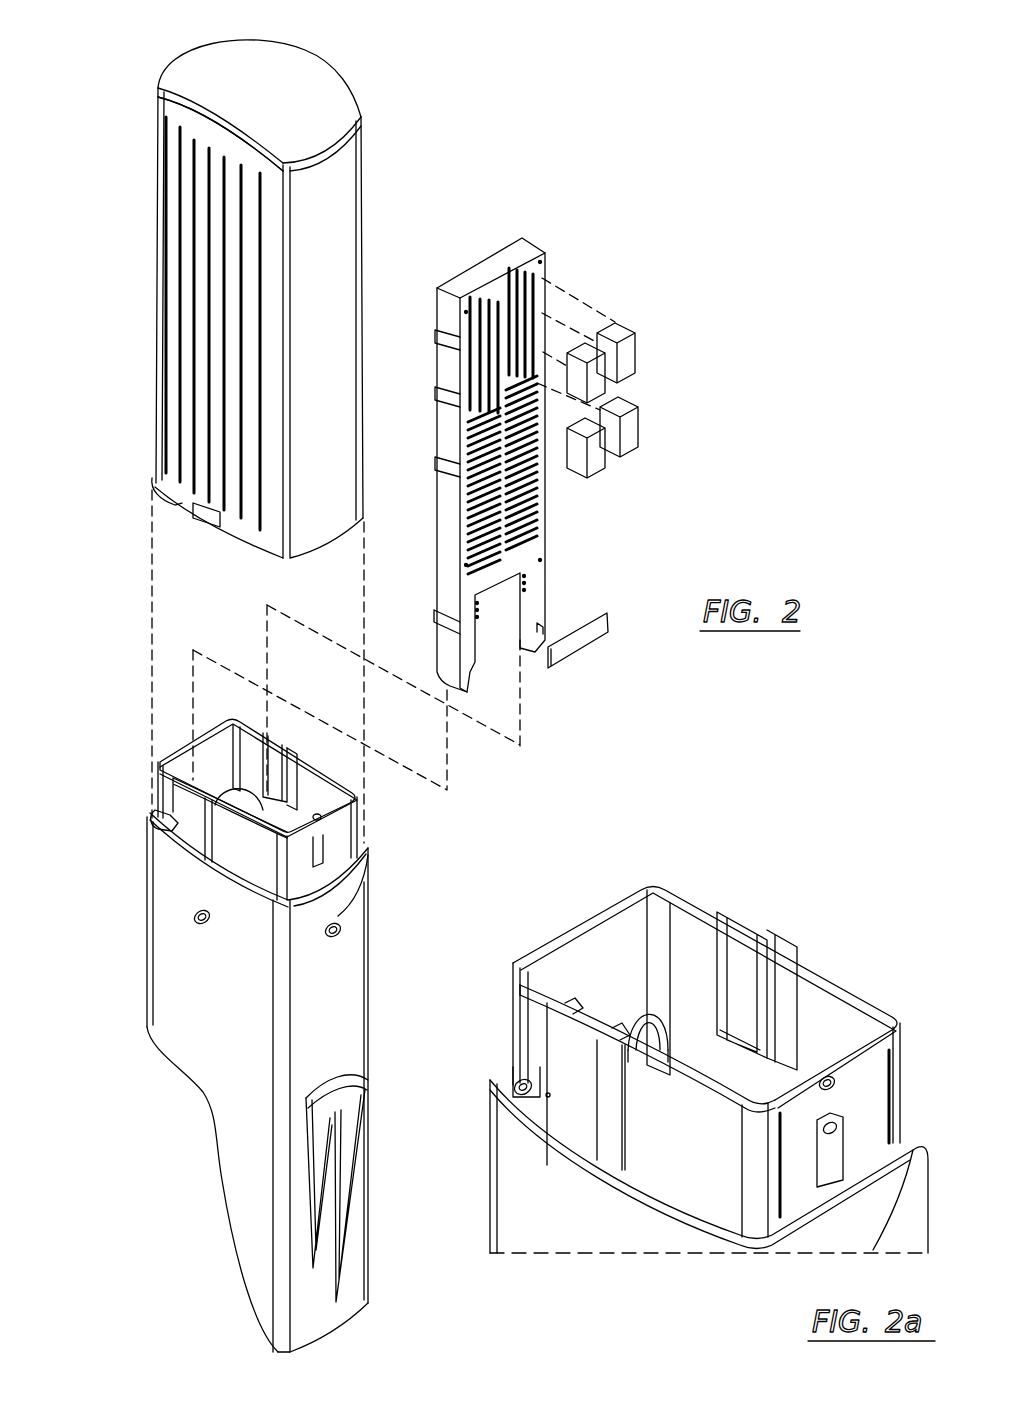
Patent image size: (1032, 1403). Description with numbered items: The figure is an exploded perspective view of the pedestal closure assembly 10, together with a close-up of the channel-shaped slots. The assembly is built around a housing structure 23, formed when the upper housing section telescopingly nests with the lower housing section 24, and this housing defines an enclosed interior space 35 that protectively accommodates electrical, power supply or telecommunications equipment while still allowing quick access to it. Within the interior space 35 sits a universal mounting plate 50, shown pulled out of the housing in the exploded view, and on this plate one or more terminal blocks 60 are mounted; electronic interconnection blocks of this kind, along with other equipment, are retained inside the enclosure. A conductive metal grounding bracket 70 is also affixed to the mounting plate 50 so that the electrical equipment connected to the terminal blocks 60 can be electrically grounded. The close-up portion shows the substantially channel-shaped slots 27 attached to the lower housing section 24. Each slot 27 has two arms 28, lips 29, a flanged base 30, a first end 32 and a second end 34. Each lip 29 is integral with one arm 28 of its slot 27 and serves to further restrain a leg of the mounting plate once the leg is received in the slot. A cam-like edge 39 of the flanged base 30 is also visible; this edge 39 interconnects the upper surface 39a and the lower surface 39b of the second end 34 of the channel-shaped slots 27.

In FIG. 2, the pedestal closure assembly 10 is at (498, 155).
In FIG. 2, the housing structure 23 is at (178, 515).
In FIG. 2, the lower housing section 24 is at (196, 1094).
In FIG. 2, the interior space 35 is at (208, 90).
In FIG. 2, the universal mounting plate 50 is at (540, 520).
In FIG. 2, the terminal blocks 60 is at (636, 352).
In FIG. 2, the conductive metal grounding bracket 70 is at (580, 650).
In FIG. 2a, the channel-shaped slots 27 is at (722, 975).
In FIG. 2a, the arms 28 is at (702, 933).
In FIG. 2a, the lips 29 is at (772, 1010).
In FIG. 2a, the flanged base 30 is at (747, 1026).
In FIG. 2a, the first end 32 is at (727, 910).
In FIG. 2a, the second end 34 is at (745, 1030).
In FIG. 2a, the cam-like edge 39 is at (742, 1052).
In FIG. 2a, the upper surface 39a is at (625, 1060).
In FIG. 2a, the lower surface 39b is at (760, 1070).